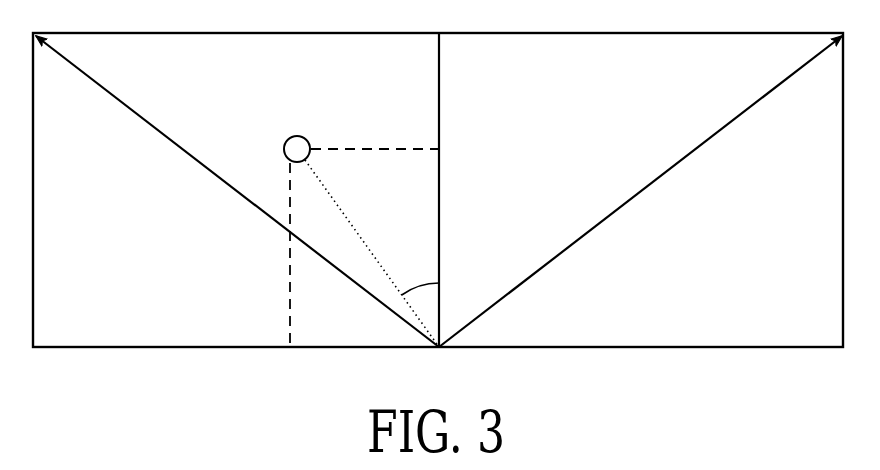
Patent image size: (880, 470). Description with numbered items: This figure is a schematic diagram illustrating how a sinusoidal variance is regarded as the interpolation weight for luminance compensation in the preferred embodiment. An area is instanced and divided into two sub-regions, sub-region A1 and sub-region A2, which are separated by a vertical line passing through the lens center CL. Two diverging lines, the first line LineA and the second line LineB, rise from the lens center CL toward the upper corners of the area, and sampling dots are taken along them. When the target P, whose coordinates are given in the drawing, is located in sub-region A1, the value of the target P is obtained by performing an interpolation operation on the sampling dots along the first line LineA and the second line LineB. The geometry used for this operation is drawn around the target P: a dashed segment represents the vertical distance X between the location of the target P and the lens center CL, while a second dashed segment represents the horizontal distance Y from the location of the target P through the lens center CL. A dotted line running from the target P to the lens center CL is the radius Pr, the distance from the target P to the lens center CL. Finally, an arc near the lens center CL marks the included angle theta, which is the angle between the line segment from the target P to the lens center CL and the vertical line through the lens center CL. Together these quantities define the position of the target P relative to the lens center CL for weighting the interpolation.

The Line A LineA is at (237, 191).
The Line B LineB is at (640, 191).
The sub-region A1 is at (337, 76).
The sub-region A2 is at (141, 261).
The target P is at (288, 134).
The vertical distance X is at (375, 136).
The horizontal distance Y is at (277, 255).
The radius Pr is at (372, 253).
The included angle θ theta is at (420, 275).
The lens center CL is at (439, 205).